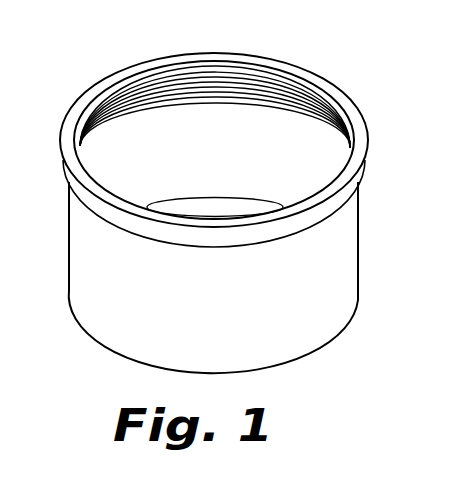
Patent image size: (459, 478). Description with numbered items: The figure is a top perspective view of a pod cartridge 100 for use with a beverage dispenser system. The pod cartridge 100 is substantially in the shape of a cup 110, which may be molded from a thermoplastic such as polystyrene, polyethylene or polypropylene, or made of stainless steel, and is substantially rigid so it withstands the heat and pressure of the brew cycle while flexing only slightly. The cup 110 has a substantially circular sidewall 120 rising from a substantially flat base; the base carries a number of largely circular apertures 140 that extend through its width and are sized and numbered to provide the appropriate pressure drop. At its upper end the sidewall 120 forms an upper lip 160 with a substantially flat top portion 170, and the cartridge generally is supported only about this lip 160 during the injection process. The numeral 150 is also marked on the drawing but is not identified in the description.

The pod cartridge 100 is at (141, 40).
The cup 110 is at (370, 240).
The sidewall 120 is at (358, 292).
The apertures 140 is at (221, 216).
The rim 150 is at (256, 140).
The upper lip 160 is at (364, 160).
The flat top portion 170 is at (350, 105).